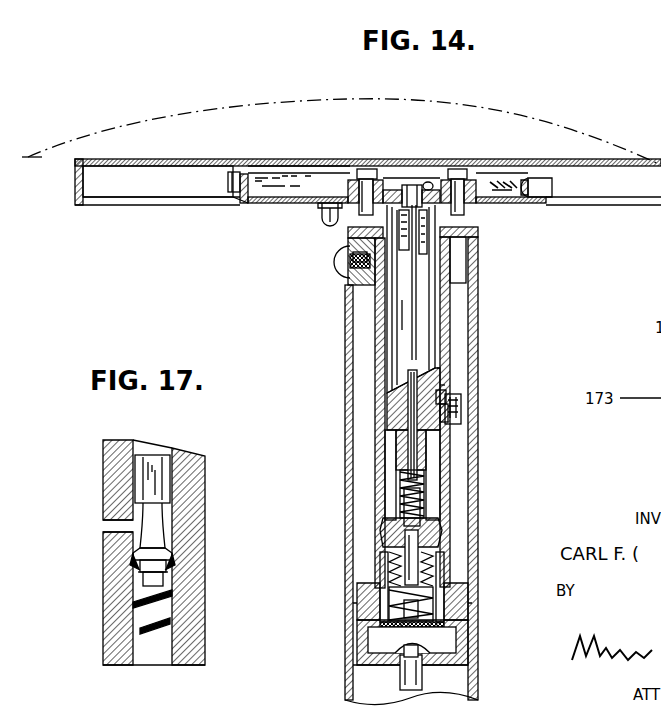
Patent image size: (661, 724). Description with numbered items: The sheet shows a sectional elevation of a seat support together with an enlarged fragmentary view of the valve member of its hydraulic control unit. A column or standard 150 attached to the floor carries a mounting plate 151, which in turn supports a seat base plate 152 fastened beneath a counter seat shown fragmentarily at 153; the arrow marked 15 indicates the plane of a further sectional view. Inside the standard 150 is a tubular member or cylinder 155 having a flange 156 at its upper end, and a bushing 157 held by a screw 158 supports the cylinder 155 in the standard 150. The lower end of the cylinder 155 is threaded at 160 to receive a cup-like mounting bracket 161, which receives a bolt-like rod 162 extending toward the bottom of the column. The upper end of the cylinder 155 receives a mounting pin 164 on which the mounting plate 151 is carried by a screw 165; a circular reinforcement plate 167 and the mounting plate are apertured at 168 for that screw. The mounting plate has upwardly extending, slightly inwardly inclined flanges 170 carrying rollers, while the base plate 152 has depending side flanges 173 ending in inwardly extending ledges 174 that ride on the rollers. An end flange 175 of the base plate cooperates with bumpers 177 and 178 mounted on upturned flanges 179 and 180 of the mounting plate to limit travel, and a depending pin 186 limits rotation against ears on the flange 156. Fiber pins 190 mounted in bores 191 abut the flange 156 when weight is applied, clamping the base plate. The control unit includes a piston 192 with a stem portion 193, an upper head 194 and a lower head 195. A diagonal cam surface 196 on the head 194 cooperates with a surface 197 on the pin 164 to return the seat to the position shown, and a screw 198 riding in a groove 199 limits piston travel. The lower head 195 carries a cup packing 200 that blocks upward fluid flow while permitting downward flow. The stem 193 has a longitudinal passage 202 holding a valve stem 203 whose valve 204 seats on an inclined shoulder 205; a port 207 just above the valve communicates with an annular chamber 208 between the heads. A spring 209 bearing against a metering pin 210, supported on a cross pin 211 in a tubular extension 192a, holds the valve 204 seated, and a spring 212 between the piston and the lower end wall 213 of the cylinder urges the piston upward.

In FIG. 14, the section line 15 is at (27, 154).
In FIG. 14, the counter seat 153 is at (130, 138).
In FIG. 14, the seat base plate 152 is at (584, 158).
In FIG. 14, the depending end flange 175 is at (72, 186).
In FIG. 14, the depending flange 173 is at (110, 190).
In FIG. 14, the inwardly extending ledge 174 is at (145, 200).
In FIG. 14, the bumper 177 is at (236, 172).
In FIG. 14, the upturned flange 179 is at (236, 198).
In FIG. 14, the upwardly extending inclined flange 170 is at (316, 183).
In FIG. 14, the mounting plate 151 is at (256, 210).
In FIG. 14, the depending pin 186 is at (326, 224).
In FIG. 14, the fiber pin 190 is at (366, 176).
In FIG. 14, the circular reinforcement plate 167 is at (395, 190).
In FIG. 14, the aperture 168 is at (414, 188).
In FIG. 14, the screw 165 is at (438, 184).
In FIG. 14, the bore 191 is at (487, 166).
In FIG. 14, the bumper 178 is at (552, 170).
In FIG. 14, the upturned flange 180 is at (540, 200).
In FIG. 14, the column or standard 150 is at (480, 469).
In FIG. 14, the flange 156 is at (476, 234).
In FIG. 14, the bushing 157 is at (360, 290).
In FIG. 14, the screw 158 is at (342, 270).
In FIG. 14, the mounting pin 164 is at (420, 310).
In FIG. 14, the cam surface 197 is at (378, 386).
In FIG. 14, the cam surface 196 is at (445, 372).
In FIG. 14, the upper head 194 is at (445, 390).
In FIG. 14, the groove 199 is at (448, 396).
In FIG. 14, the screw 198 is at (462, 410).
In FIG. 14, the stem portion 193 is at (400, 445).
In FIG. 17, the stem portion 193 is at (115, 478).
In FIG. 14, the annular chamber 208 is at (390, 468).
In FIG. 14, the tubular member or cylinder 155 is at (452, 441).
In FIG. 14, the spring 209 is at (402, 498).
In FIG. 17, the spring 209 is at (135, 632).
In FIG. 14, the piston 192 is at (428, 497).
In FIG. 14, the cup packing 200 is at (384, 532).
In FIG. 14, the lower head 195 is at (444, 530).
In FIG. 14, the metering pin 210 is at (400, 568).
In FIG. 14, the cross pin 211 is at (400, 606).
In FIG. 14, the spring 212 is at (436, 622).
In FIG. 14, the threaded lower end 160 is at (455, 598).
In FIG. 14, the mounting bracket 161 is at (464, 634).
In FIG. 14, the tubular extension 192a is at (410, 612).
In FIG. 14, the lower end wall 213 is at (352, 668).
In FIG. 14, the bolt-like rod 162 is at (410, 682).
In FIG. 17, the valve stem 203 is at (150, 468).
In FIG. 17, the port 207 is at (110, 526).
In FIG. 17, the inclined shoulder 205 is at (133, 560).
In FIG. 17, the valve 204 is at (138, 578).
In FIG. 17, the longitudinally extending passage 202 is at (128, 612).